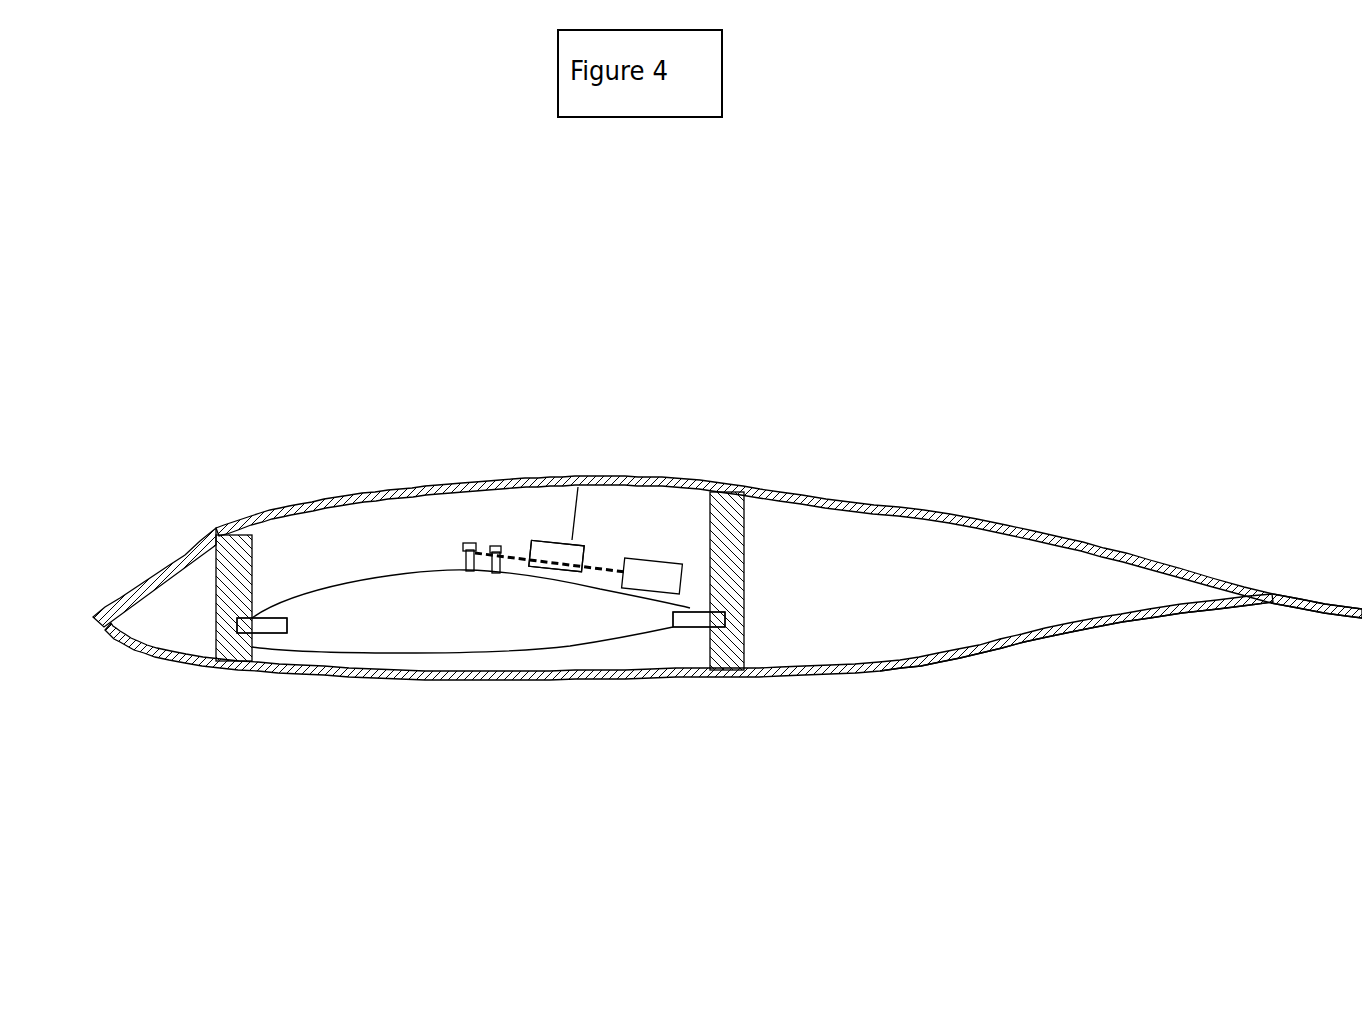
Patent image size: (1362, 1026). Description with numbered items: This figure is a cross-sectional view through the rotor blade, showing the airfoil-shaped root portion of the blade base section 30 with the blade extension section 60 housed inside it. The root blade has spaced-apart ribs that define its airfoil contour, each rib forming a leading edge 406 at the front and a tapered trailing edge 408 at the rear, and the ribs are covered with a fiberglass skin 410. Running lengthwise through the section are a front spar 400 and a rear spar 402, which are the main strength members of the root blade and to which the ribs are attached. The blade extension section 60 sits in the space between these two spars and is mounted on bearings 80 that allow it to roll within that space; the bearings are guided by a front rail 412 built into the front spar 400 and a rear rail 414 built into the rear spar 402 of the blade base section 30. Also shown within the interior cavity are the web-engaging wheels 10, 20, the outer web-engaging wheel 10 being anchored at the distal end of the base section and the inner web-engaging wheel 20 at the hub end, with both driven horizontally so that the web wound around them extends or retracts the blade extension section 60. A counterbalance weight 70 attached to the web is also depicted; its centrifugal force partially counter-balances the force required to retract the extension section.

The outer web-engaging wheel 10 is at (538, 538).
The inner web-engaging wheel 20 is at (538, 538).
The blade base section 30 is at (880, 670).
The blade extension section 60 is at (393, 570).
The counterbalance weight 70 is at (657, 557).
The bearings 80 is at (683, 632).
The front spar 400 is at (240, 533).
The rear spar 402 is at (732, 670).
The leading edge 406 is at (100, 628).
The tapered trailing edge 408 is at (1330, 602).
The fiberglass skin 410 is at (1047, 633).
The front rail 412 is at (230, 633).
The rear rail 414 is at (735, 607).